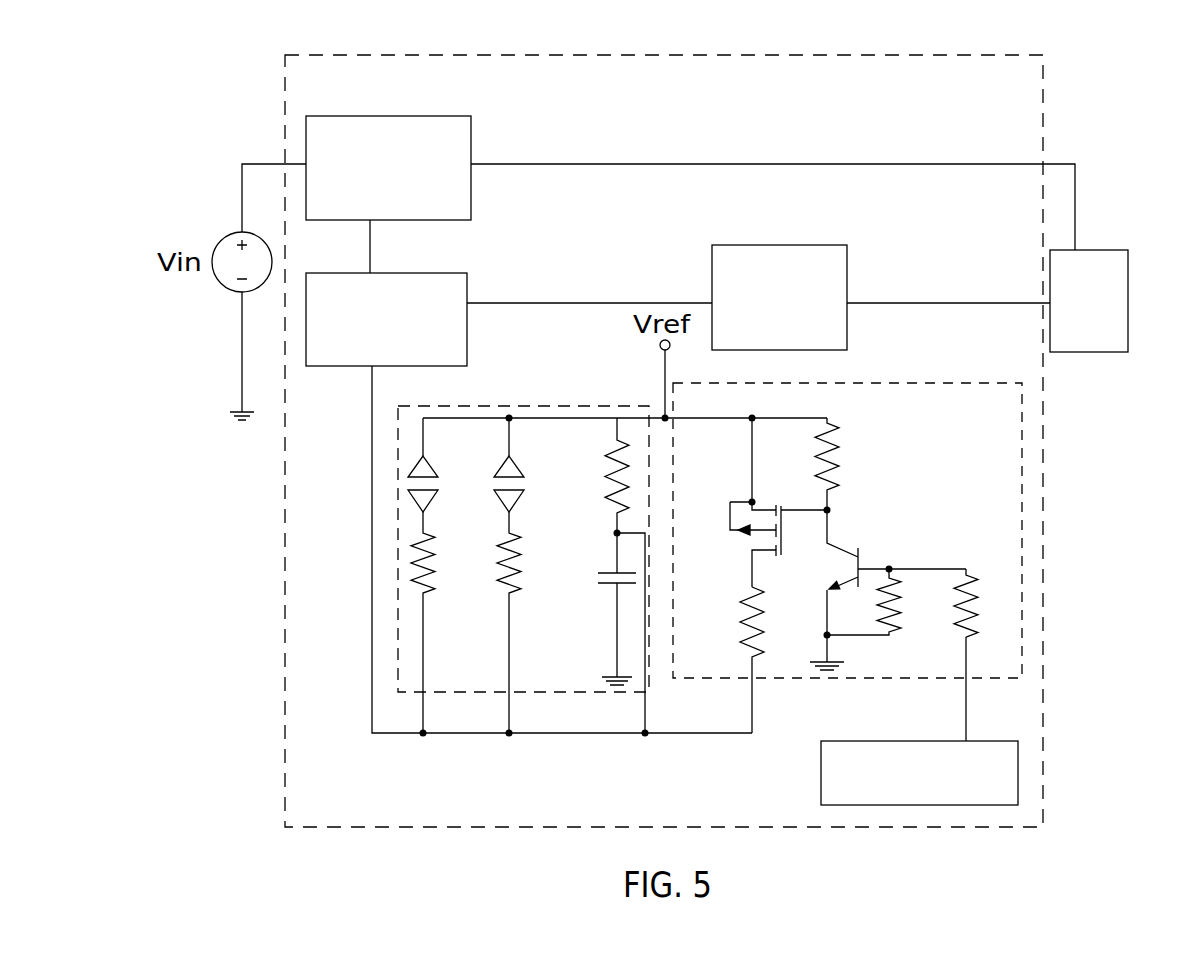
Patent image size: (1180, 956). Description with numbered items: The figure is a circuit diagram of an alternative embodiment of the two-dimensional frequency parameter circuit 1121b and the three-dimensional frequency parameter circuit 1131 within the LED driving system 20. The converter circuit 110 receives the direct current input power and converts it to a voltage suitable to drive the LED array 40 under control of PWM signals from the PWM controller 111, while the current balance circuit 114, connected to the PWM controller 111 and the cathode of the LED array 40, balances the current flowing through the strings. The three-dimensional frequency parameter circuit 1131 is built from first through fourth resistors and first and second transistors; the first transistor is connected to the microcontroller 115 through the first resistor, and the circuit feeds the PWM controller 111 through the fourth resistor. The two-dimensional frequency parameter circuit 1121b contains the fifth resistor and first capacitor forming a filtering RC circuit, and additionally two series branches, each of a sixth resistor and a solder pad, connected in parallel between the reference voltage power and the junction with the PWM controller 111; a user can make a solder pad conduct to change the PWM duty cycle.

The LED driving system 20 is at (636, 53).
The converter circuit 110 is at (418, 116).
The pulse width modulator (PWM) controller 111 is at (456, 271).
The current balance circuit 114 is at (742, 243).
The LED array 40 is at (1083, 248).
The 2D frequency parameter circuit 1121b is at (470, 405).
The 3D frequency parameter circuit 1131 is at (878, 381).
The microcontroller 115 is at (968, 740).